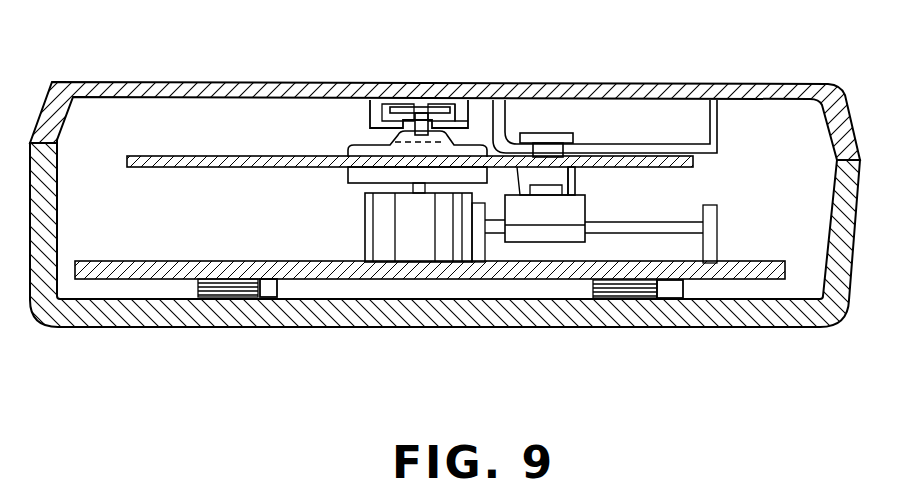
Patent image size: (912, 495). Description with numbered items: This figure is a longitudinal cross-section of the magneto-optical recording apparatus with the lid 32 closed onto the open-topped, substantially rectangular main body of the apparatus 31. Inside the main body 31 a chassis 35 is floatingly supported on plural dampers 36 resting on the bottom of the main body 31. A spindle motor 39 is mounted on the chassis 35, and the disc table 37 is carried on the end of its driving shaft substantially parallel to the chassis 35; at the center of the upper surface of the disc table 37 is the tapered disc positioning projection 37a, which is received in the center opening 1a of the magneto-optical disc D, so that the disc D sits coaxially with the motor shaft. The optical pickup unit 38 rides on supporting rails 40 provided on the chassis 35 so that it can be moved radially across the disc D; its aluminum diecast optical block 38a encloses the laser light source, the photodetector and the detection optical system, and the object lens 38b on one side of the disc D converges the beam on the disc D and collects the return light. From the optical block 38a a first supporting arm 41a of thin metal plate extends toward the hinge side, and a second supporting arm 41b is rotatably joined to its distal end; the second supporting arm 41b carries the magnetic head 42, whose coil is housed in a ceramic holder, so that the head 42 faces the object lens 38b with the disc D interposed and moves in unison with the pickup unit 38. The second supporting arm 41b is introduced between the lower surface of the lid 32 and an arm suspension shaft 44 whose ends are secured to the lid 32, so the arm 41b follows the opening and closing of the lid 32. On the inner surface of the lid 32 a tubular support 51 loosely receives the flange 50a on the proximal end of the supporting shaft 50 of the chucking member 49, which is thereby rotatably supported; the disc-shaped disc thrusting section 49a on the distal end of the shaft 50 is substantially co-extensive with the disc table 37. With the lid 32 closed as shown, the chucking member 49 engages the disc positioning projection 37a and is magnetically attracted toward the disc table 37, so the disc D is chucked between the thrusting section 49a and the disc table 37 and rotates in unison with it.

The center opening 1a is at (385, 168).
The magneto-optical disc D is at (133, 167).
The main body of the apparatus 31 is at (828, 327).
The lid 32 is at (780, 95).
The chassis 35 is at (283, 279).
The dampers 36 is at (222, 297).
The disc table 37 is at (400, 180).
The disc positioning projection 37a is at (418, 193).
The optical pickup unit 38 is at (520, 243).
The optical block 38a is at (557, 227).
The object lens 38b is at (577, 170).
The spindle motor 39 is at (412, 235).
The supporting rails 40 is at (690, 236).
The first supporting arm 41a is at (522, 252).
The second supporting arm 41b is at (560, 143).
The magnetic head 42 is at (540, 132).
The arm suspension shaft 44 is at (677, 148).
The chucking member 49 is at (352, 128).
The disc thrusting section 49a is at (350, 142).
The supporting shaft 50 is at (441, 106).
The flange 50a is at (394, 104).
The tubular support 51 is at (466, 105).